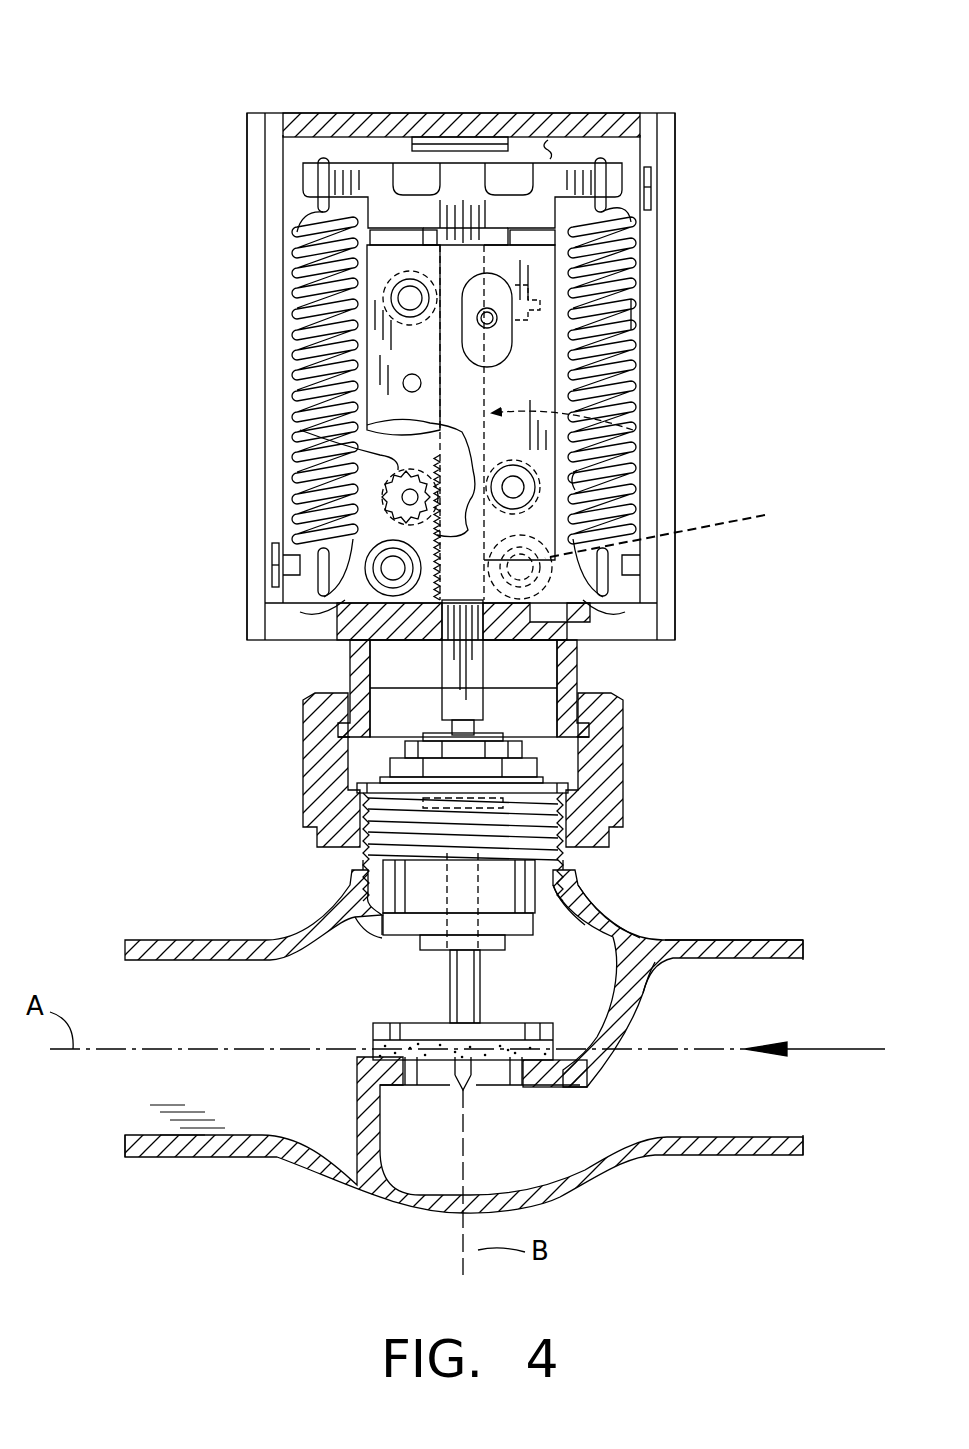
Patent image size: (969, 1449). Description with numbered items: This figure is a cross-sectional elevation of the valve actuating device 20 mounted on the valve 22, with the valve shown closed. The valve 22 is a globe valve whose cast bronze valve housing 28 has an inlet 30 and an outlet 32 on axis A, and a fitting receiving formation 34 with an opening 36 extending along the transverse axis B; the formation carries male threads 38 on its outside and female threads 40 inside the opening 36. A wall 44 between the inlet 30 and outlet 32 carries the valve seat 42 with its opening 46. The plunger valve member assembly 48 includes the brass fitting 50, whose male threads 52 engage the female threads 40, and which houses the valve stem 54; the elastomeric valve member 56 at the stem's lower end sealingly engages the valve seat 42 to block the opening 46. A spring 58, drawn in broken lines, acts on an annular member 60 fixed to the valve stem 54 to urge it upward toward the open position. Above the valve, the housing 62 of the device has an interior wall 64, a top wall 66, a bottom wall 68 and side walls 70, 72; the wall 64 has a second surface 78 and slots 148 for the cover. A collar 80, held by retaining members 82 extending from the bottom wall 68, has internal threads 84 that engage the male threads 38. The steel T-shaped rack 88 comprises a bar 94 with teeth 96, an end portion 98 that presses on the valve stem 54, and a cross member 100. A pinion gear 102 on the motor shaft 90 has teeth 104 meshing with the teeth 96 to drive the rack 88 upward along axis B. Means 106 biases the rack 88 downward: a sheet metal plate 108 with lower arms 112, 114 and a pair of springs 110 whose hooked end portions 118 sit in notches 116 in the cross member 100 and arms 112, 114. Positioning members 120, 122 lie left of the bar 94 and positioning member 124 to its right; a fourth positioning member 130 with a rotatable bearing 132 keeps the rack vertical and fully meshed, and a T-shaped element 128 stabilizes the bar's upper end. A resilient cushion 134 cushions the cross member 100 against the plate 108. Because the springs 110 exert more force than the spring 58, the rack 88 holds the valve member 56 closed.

The valve actuating device 20 is at (800, 344).
The valve 22 is at (292, 1242).
The valve housing 28 is at (742, 938).
The inlet 30 is at (795, 962).
The outlet 32 is at (155, 1143).
The fitting receiving formation 34 is at (590, 890).
The opening 36 is at (385, 935).
The male threads 38 is at (565, 820).
The female threads 40 is at (575, 908).
The valve seat 42 is at (505, 1066).
The wall 44 is at (640, 1023).
The opening 46 is at (408, 1073).
The plunger valve member assembly 48 is at (390, 930).
The brass fitting 50 is at (520, 903).
The male threads 52 is at (350, 838).
The valve stem 54 is at (481, 985).
The valve member 56 is at (378, 1043).
The spring 58 is at (440, 818).
The annular member 60 is at (578, 787).
The housing 62 is at (690, 128).
The interior wall 64 is at (358, 120).
The top wall 66 is at (552, 136).
The bottom wall 68 is at (595, 645).
The side wall 70 is at (258, 212).
The side wall 72 is at (665, 235).
The second surface 78 is at (520, 140).
The collar 80 is at (305, 776).
The retaining members 82 is at (370, 660).
The internal threads 84 is at (340, 730).
The rack 88 is at (560, 422).
The shaft 90 is at (395, 480).
The bar 94 is at (488, 350).
The teeth 96 is at (370, 400).
The end portion 98 is at (483, 678).
The cross member 100 is at (458, 185).
The pinion gear 102 is at (375, 440).
The teeth 104 is at (385, 512).
The means for biasing the rack 106 is at (275, 201).
The plate 108 is at (565, 490).
The springs 110 is at (392, 298).
The lower arm 112 is at (340, 560).
The lower arm 114 is at (625, 560).
The notches 116 is at (320, 165).
The hooked end portions 118 is at (321, 160).
The positioning member 120 is at (398, 298).
The positioning member 122 is at (385, 596).
The positioning member 124 is at (540, 487).
The T-shaped element 128 is at (655, 318).
The fourth positioning member 130 is at (548, 592).
The rotatable bearing 132 is at (682, 529).
The resilient cushion 134 is at (402, 232).
The slots 148 is at (652, 190).